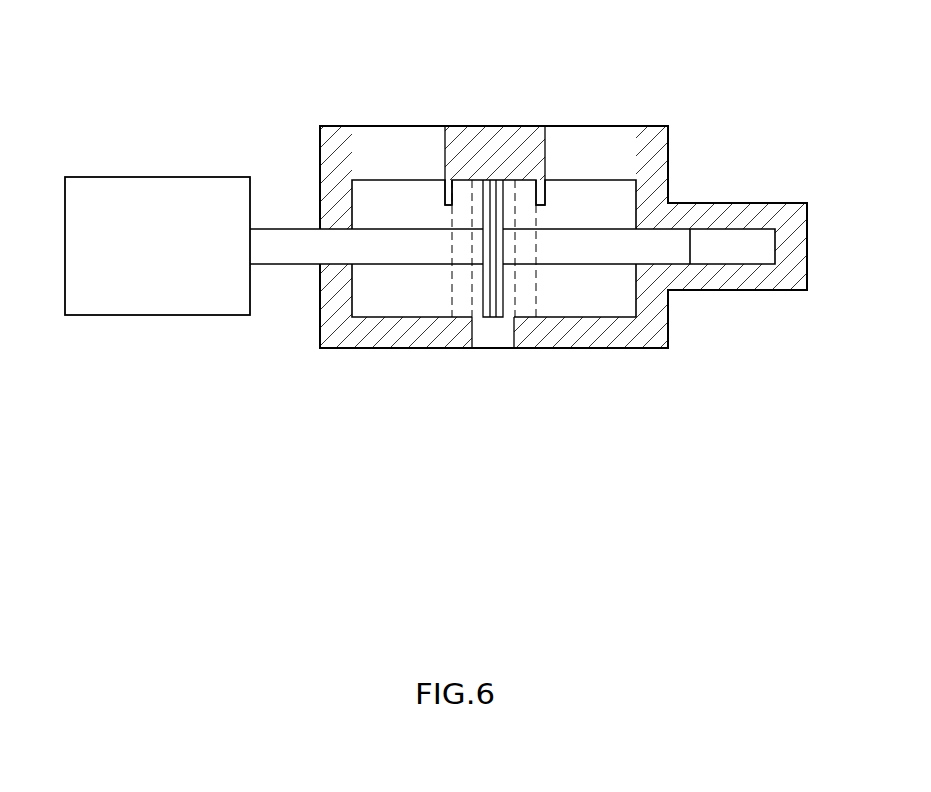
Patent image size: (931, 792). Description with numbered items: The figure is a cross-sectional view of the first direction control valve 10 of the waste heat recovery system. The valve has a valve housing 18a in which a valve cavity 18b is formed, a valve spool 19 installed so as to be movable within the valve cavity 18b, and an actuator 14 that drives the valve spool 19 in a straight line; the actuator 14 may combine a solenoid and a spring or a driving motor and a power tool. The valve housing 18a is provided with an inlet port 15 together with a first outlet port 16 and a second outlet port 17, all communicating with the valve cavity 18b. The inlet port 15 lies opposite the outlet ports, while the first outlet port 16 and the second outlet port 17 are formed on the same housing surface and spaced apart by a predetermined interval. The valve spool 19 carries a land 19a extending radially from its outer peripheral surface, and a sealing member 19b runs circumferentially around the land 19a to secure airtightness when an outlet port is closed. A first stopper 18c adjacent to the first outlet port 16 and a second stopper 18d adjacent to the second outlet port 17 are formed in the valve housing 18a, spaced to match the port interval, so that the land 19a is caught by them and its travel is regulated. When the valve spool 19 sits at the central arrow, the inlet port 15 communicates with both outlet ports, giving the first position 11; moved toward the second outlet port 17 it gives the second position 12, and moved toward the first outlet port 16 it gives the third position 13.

The first direction control valve 10 is at (242, 57).
The first position 11 is at (493, 168).
The second position 12 is at (526, 168).
The third position 13 is at (462, 168).
The actuator 14 is at (157, 315).
The inlet port 15 is at (497, 338).
The first outlet port 16 is at (371, 127).
The second outlet port 17 is at (611, 127).
The valve housing 18a is at (660, 163).
The valve cavity 18b is at (579, 289).
The first stopper 18c is at (452, 206).
The second stopper 18d is at (545, 205).
The valve spool 19 is at (398, 255).
The land 19a is at (504, 302).
The sealing member 19b is at (493, 302).